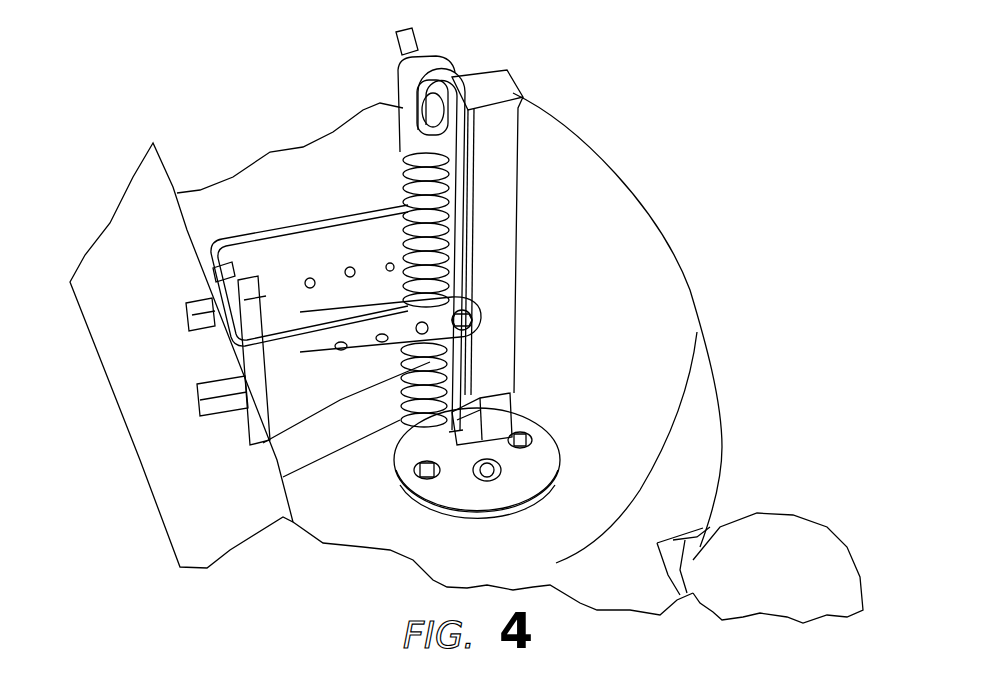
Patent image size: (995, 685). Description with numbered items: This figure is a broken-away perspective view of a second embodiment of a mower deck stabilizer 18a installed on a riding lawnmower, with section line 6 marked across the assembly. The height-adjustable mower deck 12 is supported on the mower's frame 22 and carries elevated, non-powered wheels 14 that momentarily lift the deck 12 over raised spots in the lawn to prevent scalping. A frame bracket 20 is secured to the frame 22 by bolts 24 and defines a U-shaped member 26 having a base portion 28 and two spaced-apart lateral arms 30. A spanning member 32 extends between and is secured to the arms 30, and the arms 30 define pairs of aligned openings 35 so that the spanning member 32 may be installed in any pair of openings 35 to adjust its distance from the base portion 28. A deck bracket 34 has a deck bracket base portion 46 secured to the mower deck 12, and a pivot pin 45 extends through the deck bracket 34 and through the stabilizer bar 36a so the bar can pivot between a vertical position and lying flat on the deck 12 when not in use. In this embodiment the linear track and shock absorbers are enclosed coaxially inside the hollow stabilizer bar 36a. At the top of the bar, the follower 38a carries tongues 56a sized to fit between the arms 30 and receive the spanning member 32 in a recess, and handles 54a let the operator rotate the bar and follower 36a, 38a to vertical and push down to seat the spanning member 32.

The mower deck 12 is at (703, 415).
The wheels 14 is at (805, 523).
The mower deck stabilizer 18a is at (549, 168).
The frame bracket 20 is at (241, 342).
The frame 22 is at (218, 470).
The bolts 24 is at (195, 397).
The U-shaped member 26 is at (231, 250).
The base portion 28 is at (240, 275).
The lateral arms 30 is at (325, 230).
The spanning member 32 is at (440, 286).
The deck bracket 34 is at (465, 489).
The aligned openings 35 is at (354, 278).
The stabilizer bar 36a is at (512, 127).
The follower 38a is at (455, 349).
The pivot pin 45 is at (496, 482).
The deck bracket base portion 46 is at (535, 481).
The handles 54a is at (403, 40).
The tongues 56a is at (410, 152).
The section line 6- 6 is at (410, 232).